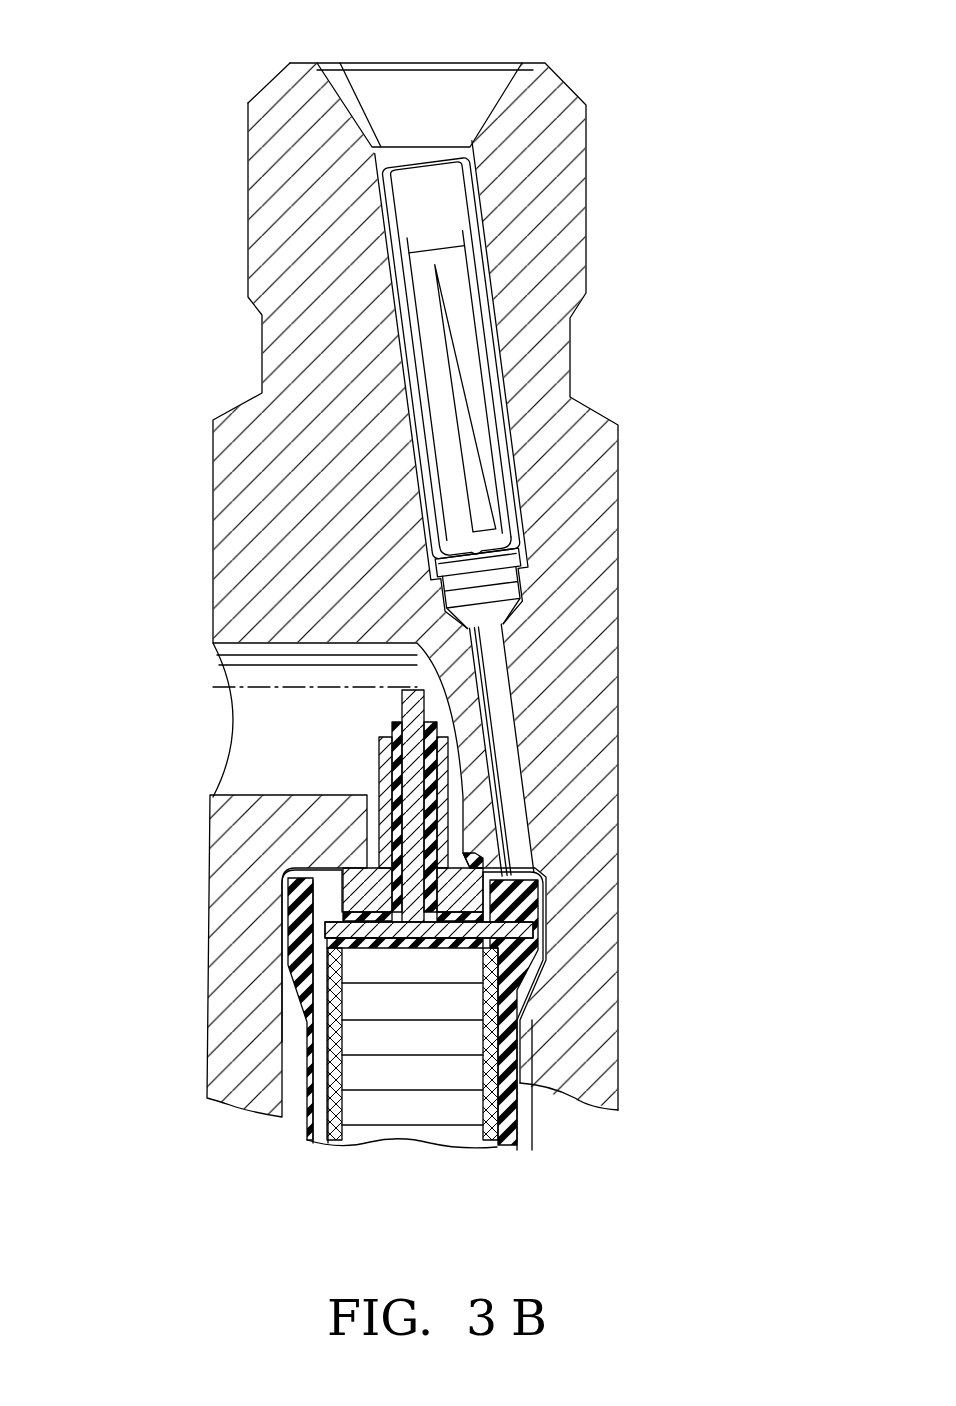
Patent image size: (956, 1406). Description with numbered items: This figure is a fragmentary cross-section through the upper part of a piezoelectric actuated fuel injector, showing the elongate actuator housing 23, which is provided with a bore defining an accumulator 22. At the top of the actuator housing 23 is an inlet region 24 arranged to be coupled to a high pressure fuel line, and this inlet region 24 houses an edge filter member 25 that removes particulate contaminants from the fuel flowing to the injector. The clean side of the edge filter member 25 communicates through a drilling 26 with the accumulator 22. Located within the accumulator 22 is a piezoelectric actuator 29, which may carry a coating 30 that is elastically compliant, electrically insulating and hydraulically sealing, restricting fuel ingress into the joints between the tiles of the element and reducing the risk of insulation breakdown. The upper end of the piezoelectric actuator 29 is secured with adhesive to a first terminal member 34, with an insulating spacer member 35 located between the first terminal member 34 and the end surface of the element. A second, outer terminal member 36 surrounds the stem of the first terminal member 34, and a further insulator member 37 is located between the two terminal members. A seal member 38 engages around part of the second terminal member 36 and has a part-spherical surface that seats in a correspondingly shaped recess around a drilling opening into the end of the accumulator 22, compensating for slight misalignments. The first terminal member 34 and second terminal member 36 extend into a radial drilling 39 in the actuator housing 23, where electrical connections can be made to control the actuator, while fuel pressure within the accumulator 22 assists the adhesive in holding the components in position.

The accumulator 22 is at (300, 1045).
The actuator housing 23 is at (218, 973).
The inlet region 24 is at (617, 118).
The edge filter member 25 is at (457, 315).
The drilling 26 is at (507, 763).
The piezoelectric actuator 29 is at (458, 1132).
The coating 30 is at (317, 1098).
The first terminal member 34 is at (395, 823).
The insulating spacer member 35 is at (450, 950).
The second terminal member 36 is at (477, 863).
The insulator member 37 is at (530, 873).
The seal member 38 is at (353, 865).
The radial drilling 39 is at (305, 795).